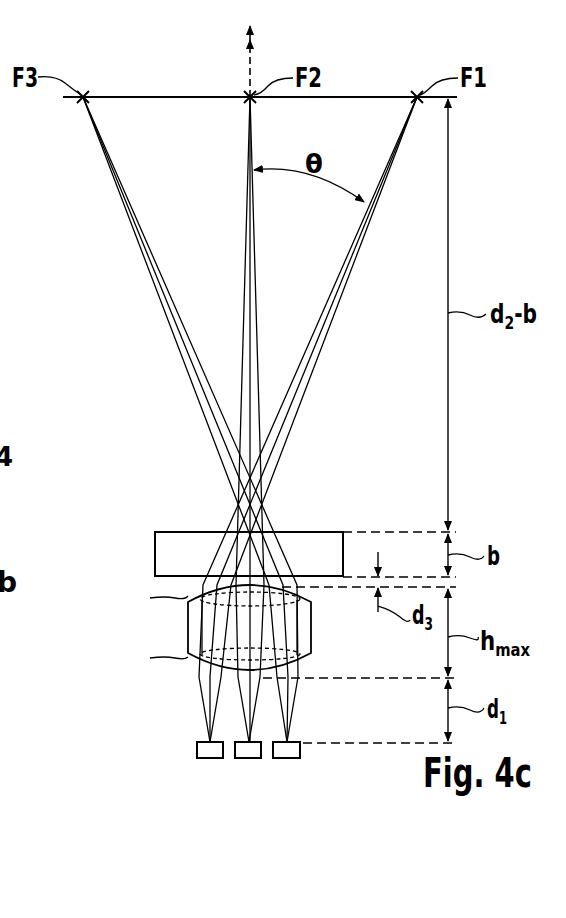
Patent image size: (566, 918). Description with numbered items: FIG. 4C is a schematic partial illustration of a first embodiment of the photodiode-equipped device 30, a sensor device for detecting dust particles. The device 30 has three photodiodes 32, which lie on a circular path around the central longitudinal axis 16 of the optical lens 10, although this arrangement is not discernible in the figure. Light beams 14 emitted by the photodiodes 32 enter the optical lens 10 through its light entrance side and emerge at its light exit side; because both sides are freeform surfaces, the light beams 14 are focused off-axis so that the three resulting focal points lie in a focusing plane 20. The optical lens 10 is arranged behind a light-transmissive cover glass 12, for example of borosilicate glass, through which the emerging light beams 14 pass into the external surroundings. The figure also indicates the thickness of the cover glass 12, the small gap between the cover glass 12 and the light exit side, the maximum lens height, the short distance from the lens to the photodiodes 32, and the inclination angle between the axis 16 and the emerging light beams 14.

The optical lens 10 is at (188, 627).
The light-transmissive cover glass 12 is at (312, 531).
The light beams 14 is at (242, 250).
The central longitudinal axis 16 is at (253, 63).
The focusing plane 20 is at (144, 96).
The photodiode-equipped device 30 is at (172, 463).
The photodiodes 32 is at (287, 759).